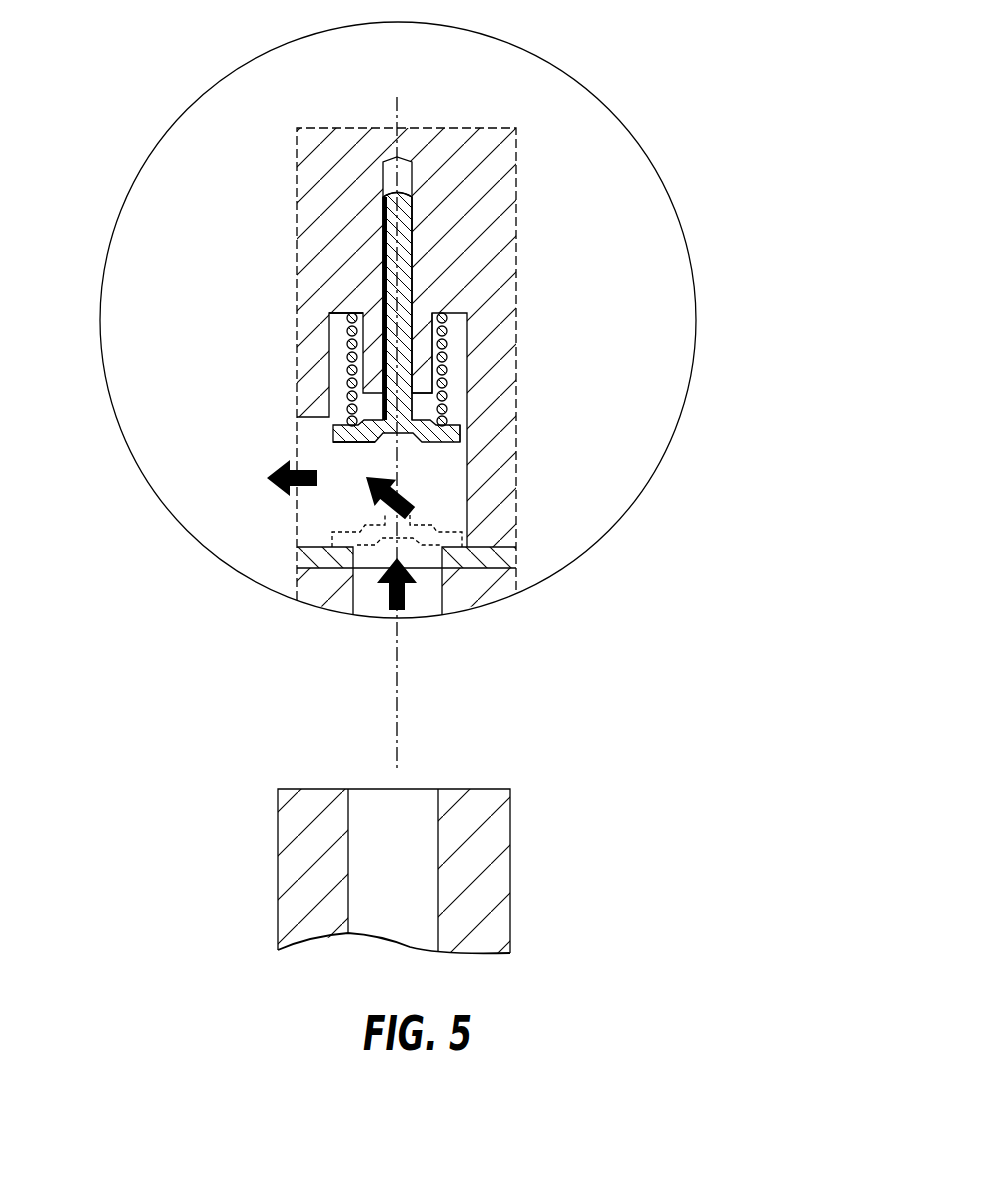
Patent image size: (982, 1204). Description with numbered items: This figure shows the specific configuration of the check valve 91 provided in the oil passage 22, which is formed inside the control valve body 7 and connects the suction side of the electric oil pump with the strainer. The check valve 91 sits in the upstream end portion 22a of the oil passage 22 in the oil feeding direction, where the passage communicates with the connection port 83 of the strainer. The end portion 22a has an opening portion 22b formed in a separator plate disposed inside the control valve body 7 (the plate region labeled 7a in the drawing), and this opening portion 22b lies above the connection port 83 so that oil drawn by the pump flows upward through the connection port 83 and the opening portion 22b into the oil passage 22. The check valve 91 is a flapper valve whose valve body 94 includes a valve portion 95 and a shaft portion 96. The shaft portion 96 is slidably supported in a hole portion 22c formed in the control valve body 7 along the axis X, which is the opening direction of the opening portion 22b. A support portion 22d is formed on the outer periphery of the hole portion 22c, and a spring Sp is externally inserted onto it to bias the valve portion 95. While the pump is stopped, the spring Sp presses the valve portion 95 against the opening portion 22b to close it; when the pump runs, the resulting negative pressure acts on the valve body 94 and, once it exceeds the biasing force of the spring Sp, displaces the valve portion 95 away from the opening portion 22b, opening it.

The control valve body 7 is at (467, 116).
The partition wall 7a is at (516, 556).
The oil passage 22 is at (333, 427).
The upstream end portion 22a is at (458, 358).
The opening portion 22b is at (365, 572).
The hole portion 22c is at (400, 180).
The support portion 22d is at (448, 336).
The connection port 83 is at (350, 810).
The check valve 91 is at (448, 414).
The valve body 94 is at (185, 308).
The valve portion 95 is at (335, 439).
The shaft portion 96 is at (358, 325).
The spring Sp is at (461, 430).
The axis X is at (397, 415).